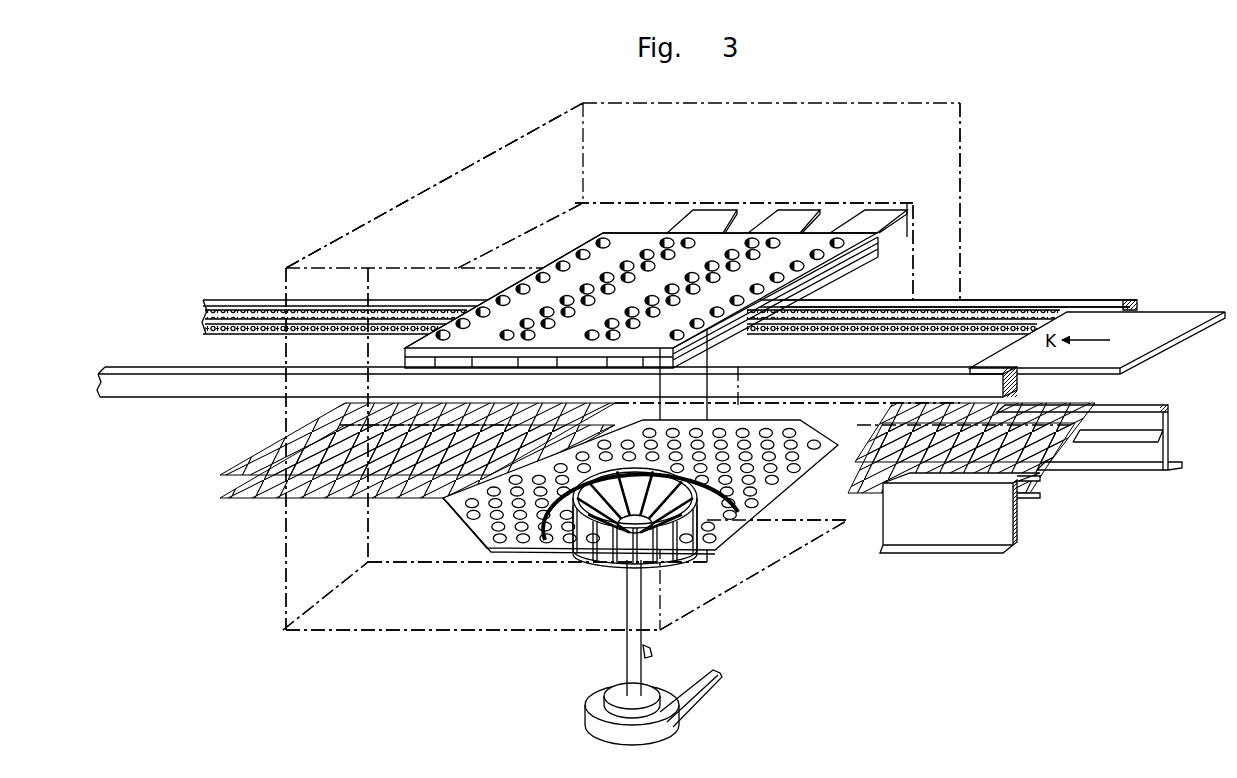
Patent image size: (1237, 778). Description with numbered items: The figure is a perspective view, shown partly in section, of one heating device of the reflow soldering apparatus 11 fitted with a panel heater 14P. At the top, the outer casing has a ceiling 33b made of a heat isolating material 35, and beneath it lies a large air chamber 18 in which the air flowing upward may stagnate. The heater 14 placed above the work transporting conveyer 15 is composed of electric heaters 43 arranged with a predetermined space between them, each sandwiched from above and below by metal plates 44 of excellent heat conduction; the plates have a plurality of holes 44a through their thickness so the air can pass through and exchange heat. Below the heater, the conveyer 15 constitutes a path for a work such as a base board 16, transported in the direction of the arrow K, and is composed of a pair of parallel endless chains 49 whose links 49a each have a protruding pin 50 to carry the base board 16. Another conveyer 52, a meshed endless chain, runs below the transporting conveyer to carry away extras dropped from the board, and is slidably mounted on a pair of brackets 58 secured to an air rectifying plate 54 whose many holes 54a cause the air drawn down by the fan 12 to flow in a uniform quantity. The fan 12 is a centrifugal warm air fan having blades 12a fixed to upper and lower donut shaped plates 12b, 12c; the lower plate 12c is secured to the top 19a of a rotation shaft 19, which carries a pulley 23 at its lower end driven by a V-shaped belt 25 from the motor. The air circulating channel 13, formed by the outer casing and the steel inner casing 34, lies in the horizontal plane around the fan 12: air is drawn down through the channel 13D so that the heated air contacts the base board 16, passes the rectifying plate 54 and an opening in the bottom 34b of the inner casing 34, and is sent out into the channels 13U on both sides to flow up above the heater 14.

The reflow soldering apparatus 11 is at (679, 363).
The fan 12 is at (648, 521).
The blades 12a is at (587, 557).
The upper donut shaped plate 12b is at (573, 543).
The lower donut shaped plate 12c is at (603, 557).
The air circulating channel 13 is at (943, 212).
The channel 13D is at (527, 263).
The channels 13U is at (310, 557).
The heater 14 is at (630, 230).
The panel heater 14P is at (547, 267).
The work transporting conveyer 15 is at (1038, 307).
The base board 16 is at (1170, 312).
The air chamber 18 is at (422, 220).
The rotation shaft 19 is at (647, 638).
The top of rotation shaft 19a is at (627, 477).
The pulley 23 is at (667, 680).
The V-shaped belt 25 is at (710, 693).
The ceiling 33b is at (568, 123).
The inner casing 34 is at (920, 234).
The bottom of inner casing 34b is at (757, 538).
The heat isolating material 35 is at (962, 168).
The electric heaters 43 is at (732, 208).
The metal plates 44 is at (641, 266).
The holes 44a is at (583, 255).
The endless chains 49 is at (948, 282).
The links 49a is at (238, 311).
The pin 50 is at (611, 313).
The conveyer 52 is at (222, 496).
The air rectifying plate 54 is at (640, 482).
The holes 54a is at (587, 457).
The brackets 58 is at (1163, 470).